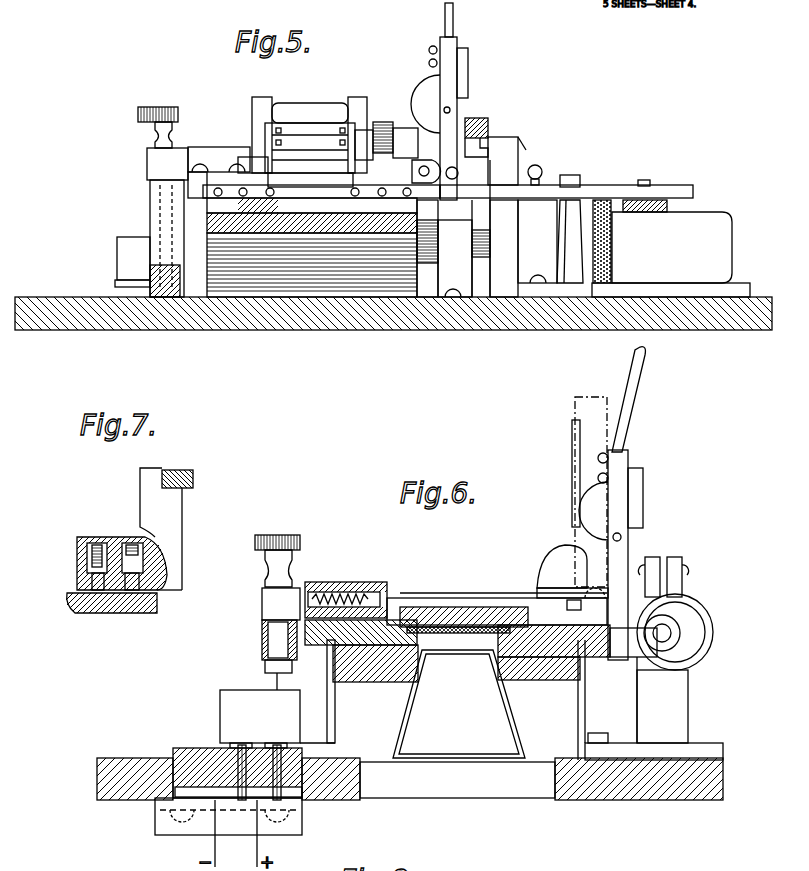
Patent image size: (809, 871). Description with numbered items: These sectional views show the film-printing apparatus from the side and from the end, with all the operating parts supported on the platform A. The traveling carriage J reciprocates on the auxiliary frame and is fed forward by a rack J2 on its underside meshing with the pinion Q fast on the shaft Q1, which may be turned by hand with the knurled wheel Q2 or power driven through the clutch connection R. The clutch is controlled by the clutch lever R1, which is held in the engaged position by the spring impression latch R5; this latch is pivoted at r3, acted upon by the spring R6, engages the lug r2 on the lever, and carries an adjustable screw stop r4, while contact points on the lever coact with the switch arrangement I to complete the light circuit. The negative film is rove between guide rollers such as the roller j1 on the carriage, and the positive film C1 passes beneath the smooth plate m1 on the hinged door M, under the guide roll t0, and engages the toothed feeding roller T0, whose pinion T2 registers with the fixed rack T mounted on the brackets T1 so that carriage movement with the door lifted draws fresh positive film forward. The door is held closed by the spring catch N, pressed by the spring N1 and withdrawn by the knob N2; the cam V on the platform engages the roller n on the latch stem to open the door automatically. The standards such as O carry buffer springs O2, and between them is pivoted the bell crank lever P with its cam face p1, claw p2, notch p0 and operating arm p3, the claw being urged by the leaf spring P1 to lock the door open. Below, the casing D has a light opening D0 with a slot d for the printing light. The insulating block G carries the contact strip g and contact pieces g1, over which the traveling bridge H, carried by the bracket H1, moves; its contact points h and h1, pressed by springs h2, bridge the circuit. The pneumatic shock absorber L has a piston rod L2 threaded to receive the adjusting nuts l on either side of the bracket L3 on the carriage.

In FIG. 5, the platform A is at (213, 330).
In FIG. 6, the platform A is at (100, 800).
In FIG. 5, the knob N2 is at (152, 108).
In FIG. 6, the knob N2 is at (282, 535).
In FIG. 5, the spring catch N is at (147, 160).
In FIG. 6, the spring catch N is at (392, 605).
In FIG. 5, the roller n is at (150, 200).
In FIG. 6, the roller n is at (262, 625).
In FIG. 5, the traveling bridge H is at (117, 245).
In FIG. 7, the traveling bridge H is at (88, 537).
In FIG. 6, the traveling bridge H is at (233, 690).
In FIG. 5, the cam V is at (170, 297).
In FIG. 5, the guide roller j1 is at (318, 183).
In FIG. 5, the toothed feeding roller T0 is at (342, 125).
In FIG. 5, the guide roll t0 is at (290, 138).
In FIG. 5, the pinion T2 is at (383, 122).
In FIG. 5, the bell crank lever P is at (457, 22).
In FIG. 6, the bell crank lever P is at (537, 592).
In FIG. 5, the operating arm p3 is at (445, 12).
In FIG. 6, the operating arm p3 is at (640, 390).
In FIG. 5, the leaf spring P1 is at (450, 128).
In FIG. 6, the leaf spring P1 is at (638, 530).
In FIG. 5, the buffer spring O2 is at (430, 88).
In FIG. 6, the buffer spring O2 is at (590, 508).
In FIG. 5, the standard O is at (470, 128).
In FIG. 6, the standard O is at (618, 475).
In FIG. 5, the pinion Q is at (412, 245).
In FIG. 5, the rack J2 is at (416, 215).
In FIG. 5, the rack T is at (460, 160).
In FIG. 5, the adjustable screw stop r4 is at (500, 165).
In FIG. 5, the bracket T1 is at (520, 158).
In FIG. 5, the spring R6 is at (548, 178).
In FIG. 5, the pivot r3 is at (573, 175).
In FIG. 5, the shaft Q1 is at (536, 236).
In FIG. 5, the knurled wheel Q2 is at (606, 185).
In FIG. 5, the spring impression latch R5 is at (625, 185).
In FIG. 5, the lug r2 is at (648, 178).
In FIG. 5, the clutch connection R is at (602, 241).
In FIG. 5, the clutch lever R1 is at (667, 205).
In FIG. 5, the switch arrangement I is at (720, 243).
In FIG. 7, the traveling carriage J is at (190, 470).
In FIG. 6, the traveling carriage J is at (405, 605).
In FIG. 7, the bracket H1 is at (177, 512).
In FIG. 6, the bracket H1 is at (318, 708).
In FIG. 7, the spring h2 is at (132, 543).
In FIG. 7, the contact strip g is at (98, 590).
In FIG. 6, the contact strip g is at (235, 748).
In FIG. 7, the contact piece g1 is at (132, 590).
In FIG. 6, the contact piece g1 is at (277, 748).
In FIG. 7, the contact point h is at (95, 585).
In FIG. 6, the contact point h is at (240, 748).
In FIG. 7, the contact point h1 is at (157, 595).
In FIG. 6, the contact point h1 is at (302, 745).
In FIG. 7, the block of insulating material G is at (67, 598).
In FIG. 6, the block of insulating material G is at (200, 750).
In FIG. 6, the spring N1 is at (342, 585).
In FIG. 6, the hinged door M is at (458, 610).
In FIG. 6, the smooth plate m1 is at (432, 610).
In FIG. 6, the positive film C1 is at (475, 612).
In FIG. 6, the slot d is at (480, 652).
In FIG. 6, the light opening D0 is at (418, 737).
In FIG. 6, the casing D is at (515, 735).
In FIG. 6, the cam face p1 is at (552, 575).
In FIG. 6, the claw p2 is at (572, 545).
In FIG. 6, the notch p0 is at (585, 555).
In FIG. 6, the pneumatic shock absorber L is at (690, 620).
In FIG. 6, the adjusting nut l is at (680, 633).
In FIG. 6, the piston rod L2 is at (680, 648).
In FIG. 6, the bracket L3 is at (625, 652).